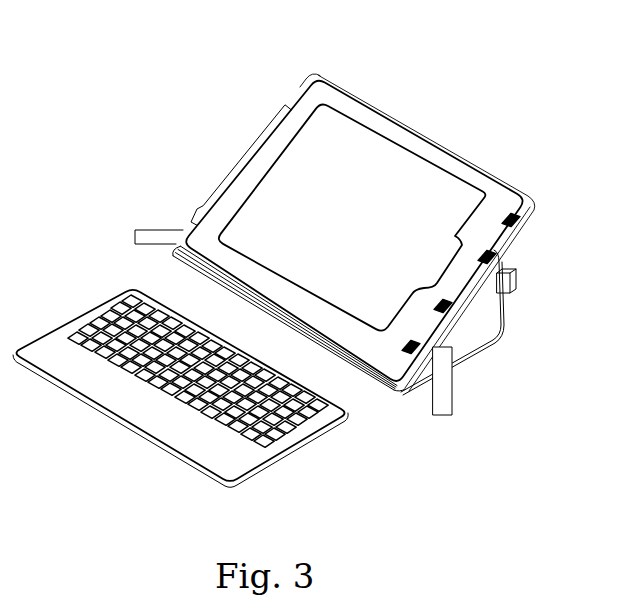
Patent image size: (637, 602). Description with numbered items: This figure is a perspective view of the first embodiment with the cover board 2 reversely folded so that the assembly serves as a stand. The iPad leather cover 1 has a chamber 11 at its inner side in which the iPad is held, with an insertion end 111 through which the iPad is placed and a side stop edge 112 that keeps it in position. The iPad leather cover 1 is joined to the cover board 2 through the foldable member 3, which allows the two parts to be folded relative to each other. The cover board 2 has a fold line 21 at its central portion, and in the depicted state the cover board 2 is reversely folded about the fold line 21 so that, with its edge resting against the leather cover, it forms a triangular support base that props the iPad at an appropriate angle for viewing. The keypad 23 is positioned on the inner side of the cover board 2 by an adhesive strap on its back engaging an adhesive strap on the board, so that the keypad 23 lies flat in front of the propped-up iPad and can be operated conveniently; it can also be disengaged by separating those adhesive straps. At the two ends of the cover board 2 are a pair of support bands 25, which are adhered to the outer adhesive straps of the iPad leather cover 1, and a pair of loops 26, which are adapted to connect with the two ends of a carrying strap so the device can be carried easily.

The iPad leather cover 1 is at (372, 120).
The chamber 11 is at (432, 192).
The insertion end 111 is at (307, 80).
The side stop edge 112 is at (238, 162).
The cover board 2 is at (468, 338).
The fold line 21 is at (457, 308).
The keypad 23 is at (133, 415).
The support bands 25 is at (142, 235).
The loops 26 is at (517, 280).
The foldable member 3 is at (370, 370).